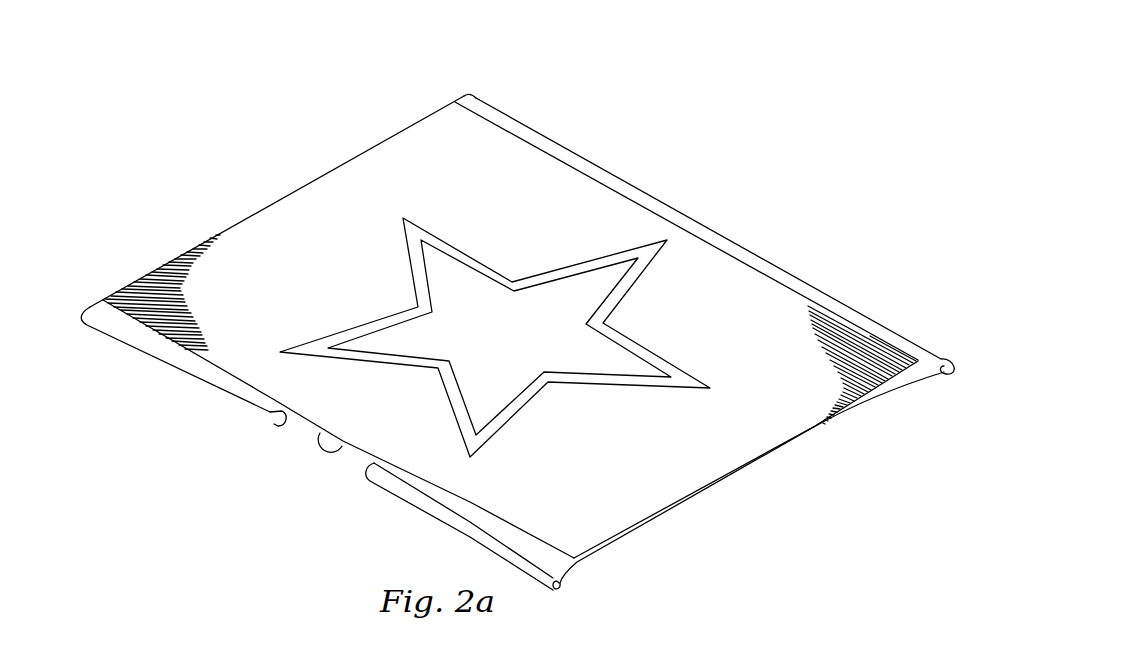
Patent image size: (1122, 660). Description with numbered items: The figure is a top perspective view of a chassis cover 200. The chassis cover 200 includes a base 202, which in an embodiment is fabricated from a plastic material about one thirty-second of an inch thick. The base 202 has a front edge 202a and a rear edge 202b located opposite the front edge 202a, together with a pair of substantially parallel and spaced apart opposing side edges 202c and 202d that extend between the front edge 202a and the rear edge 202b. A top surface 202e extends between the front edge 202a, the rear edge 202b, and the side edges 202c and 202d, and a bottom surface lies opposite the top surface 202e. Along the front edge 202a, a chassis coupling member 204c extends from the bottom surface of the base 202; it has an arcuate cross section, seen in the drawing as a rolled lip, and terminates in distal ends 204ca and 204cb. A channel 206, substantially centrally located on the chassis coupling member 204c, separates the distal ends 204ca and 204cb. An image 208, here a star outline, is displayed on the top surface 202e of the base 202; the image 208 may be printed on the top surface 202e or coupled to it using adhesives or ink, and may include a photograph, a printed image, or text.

The chassis cover 200 is at (719, 90).
The base 202 is at (605, 172).
The front edge 202a is at (343, 442).
The rear edge 202b is at (696, 221).
The side edge 202c is at (271, 206).
The side edge 202d is at (748, 470).
The top surface 202e is at (378, 150).
The chassis coupling member 204c is at (228, 397).
The distal end 204ca is at (566, 585).
The distal end 204cb is at (281, 429).
The channel 206 is at (342, 461).
The image 208 is at (410, 265).